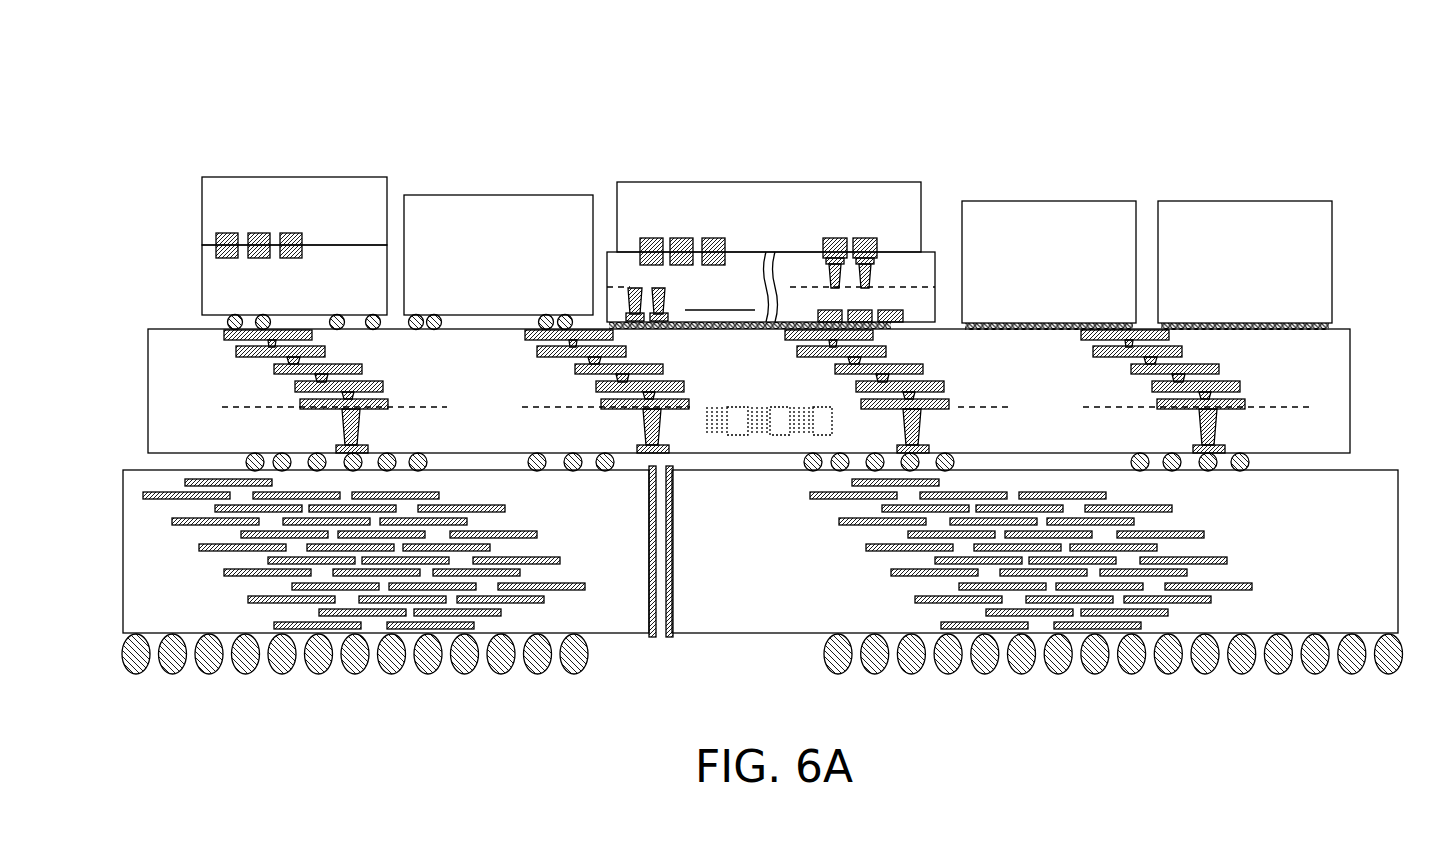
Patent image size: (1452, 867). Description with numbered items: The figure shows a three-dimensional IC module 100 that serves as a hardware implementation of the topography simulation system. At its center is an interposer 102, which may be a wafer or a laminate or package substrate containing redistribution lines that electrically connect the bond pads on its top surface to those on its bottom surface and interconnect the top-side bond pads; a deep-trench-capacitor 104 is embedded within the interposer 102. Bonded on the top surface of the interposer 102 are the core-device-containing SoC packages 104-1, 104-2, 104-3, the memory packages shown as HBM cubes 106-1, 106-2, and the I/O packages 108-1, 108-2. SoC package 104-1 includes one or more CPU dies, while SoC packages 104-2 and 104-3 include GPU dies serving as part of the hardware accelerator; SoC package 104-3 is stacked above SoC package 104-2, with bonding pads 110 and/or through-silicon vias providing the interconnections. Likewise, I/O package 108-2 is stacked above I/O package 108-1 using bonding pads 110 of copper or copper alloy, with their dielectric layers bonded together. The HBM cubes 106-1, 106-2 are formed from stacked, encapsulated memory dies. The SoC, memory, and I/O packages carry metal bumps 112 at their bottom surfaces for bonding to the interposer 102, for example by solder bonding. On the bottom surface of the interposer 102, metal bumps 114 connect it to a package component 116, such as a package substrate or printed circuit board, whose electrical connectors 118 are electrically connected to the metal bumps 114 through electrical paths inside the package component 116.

The 3D IC module 100 is at (140, 158).
The interposer 102 is at (1341, 393).
The deep-trench-capacitor 104 is at (772, 406).
The SoC package 104-1 is at (1052, 206).
The SoC package 104-2 is at (771, 230).
The SoC package 104-3 is at (762, 190).
The HBM cube 106-1 is at (501, 199).
The HBM cube 106-2 is at (1243, 206).
The I/O package 108-1 is at (203, 273).
The I/O package 108-2 is at (203, 203).
The bonding pads 110 is at (683, 237).
The metal bumps 112 is at (228, 326).
The metal bumps 114 is at (245, 462).
The package component 116 is at (1390, 557).
The electrical connectors 118 is at (137, 670).